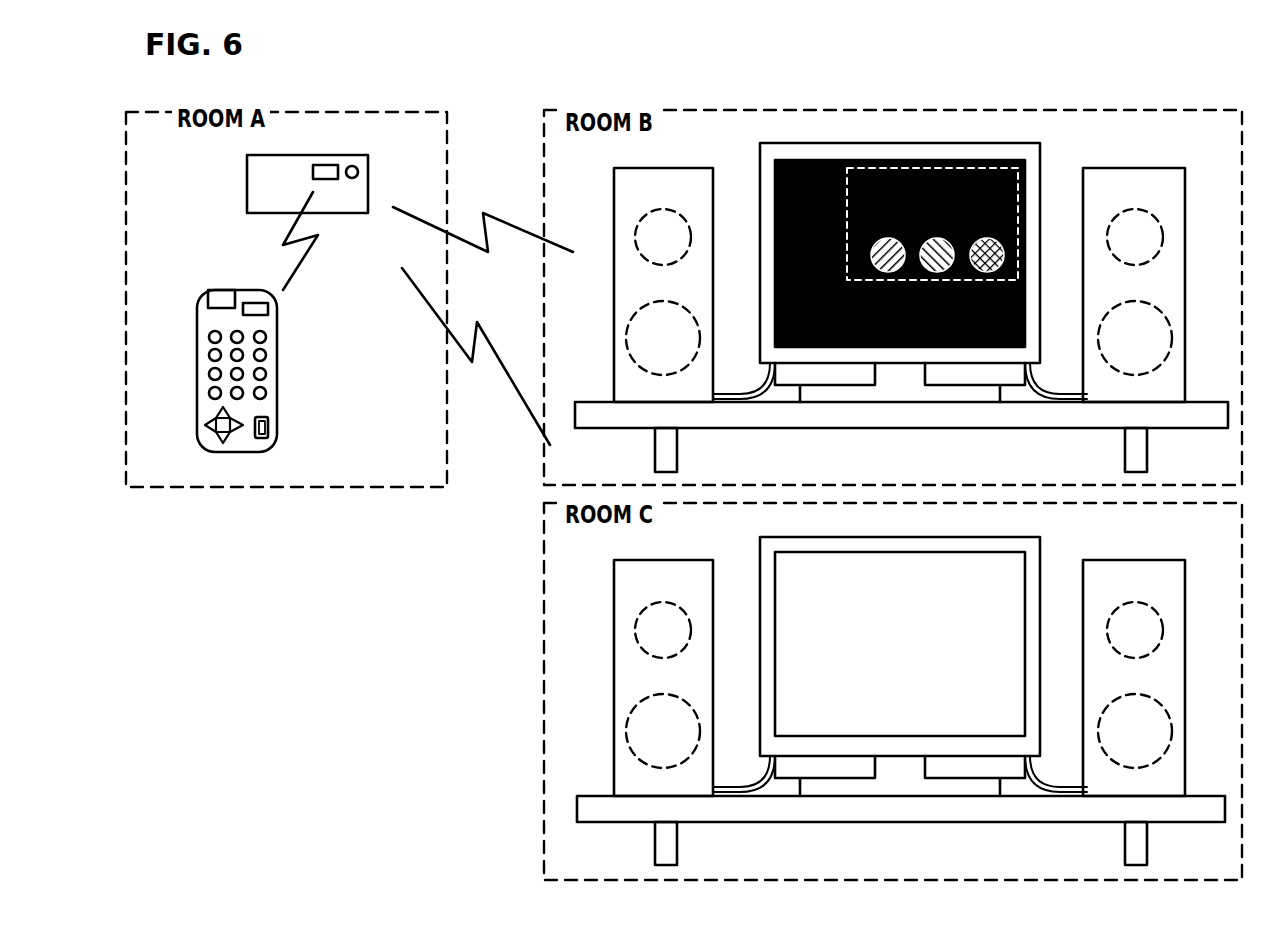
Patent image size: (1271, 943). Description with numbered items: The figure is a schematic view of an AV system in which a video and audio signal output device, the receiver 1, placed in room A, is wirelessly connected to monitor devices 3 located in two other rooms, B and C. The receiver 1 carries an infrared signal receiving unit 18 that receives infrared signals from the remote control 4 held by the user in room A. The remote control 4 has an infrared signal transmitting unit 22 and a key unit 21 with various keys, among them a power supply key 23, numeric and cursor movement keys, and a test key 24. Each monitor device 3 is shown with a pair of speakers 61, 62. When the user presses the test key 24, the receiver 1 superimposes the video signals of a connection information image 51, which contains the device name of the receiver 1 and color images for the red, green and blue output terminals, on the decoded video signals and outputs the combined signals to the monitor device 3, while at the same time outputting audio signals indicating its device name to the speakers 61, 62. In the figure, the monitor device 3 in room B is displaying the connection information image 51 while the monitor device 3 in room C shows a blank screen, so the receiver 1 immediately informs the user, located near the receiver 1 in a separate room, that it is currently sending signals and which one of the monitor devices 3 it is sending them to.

The receiver 1 is at (272, 162).
The infrared signal receiving unit 18 is at (328, 170).
The monitor device 3 is at (905, 134).
The remote control 4 is at (238, 270).
The key unit 21 is at (196, 376).
The infrared signal transmitting unit 22 is at (217, 292).
The power supply key 23 is at (257, 303).
The test key 24 is at (262, 438).
The connection information image 51 is at (1030, 180).
The speaker 61 is at (642, 168).
The speaker 62 is at (1120, 168).